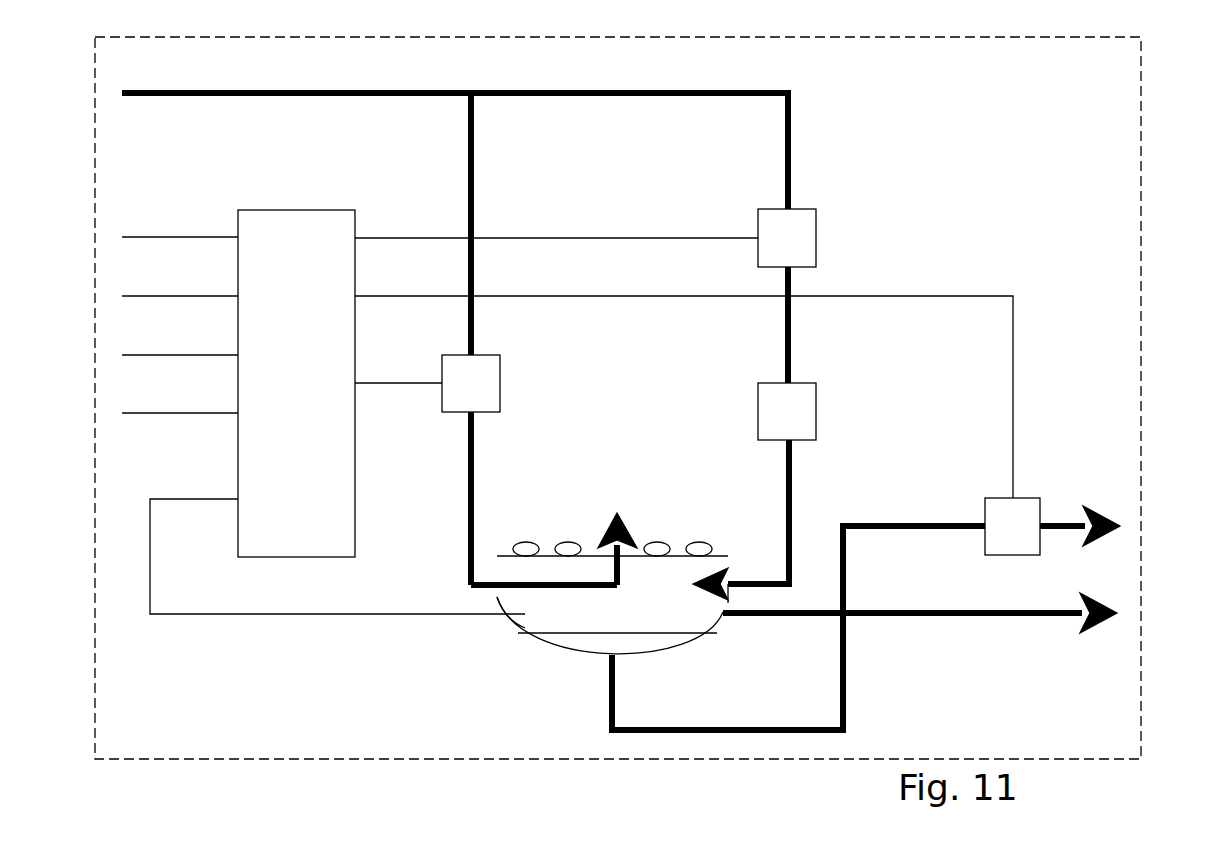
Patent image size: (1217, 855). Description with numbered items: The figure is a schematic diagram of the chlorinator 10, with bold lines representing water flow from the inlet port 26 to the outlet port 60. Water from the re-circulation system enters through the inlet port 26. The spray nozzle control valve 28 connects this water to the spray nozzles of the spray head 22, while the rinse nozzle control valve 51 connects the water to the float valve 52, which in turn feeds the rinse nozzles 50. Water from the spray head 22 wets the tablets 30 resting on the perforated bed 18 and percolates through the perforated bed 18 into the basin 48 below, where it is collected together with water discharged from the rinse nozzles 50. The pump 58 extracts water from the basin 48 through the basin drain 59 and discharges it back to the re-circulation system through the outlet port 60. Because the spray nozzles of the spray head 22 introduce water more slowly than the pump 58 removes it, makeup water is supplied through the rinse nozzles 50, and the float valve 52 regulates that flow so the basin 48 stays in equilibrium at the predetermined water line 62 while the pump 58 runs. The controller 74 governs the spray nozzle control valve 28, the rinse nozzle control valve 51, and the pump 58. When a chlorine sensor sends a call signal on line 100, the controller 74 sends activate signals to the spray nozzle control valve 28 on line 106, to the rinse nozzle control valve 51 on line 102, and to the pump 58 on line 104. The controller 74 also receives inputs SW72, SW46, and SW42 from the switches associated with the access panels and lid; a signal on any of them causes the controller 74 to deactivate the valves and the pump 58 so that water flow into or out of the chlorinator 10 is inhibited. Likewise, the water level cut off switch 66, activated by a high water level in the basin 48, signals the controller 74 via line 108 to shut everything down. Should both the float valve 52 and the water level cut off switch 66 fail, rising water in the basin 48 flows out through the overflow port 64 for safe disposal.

The chlorinator 10 is at (1141, 323).
The inlet port 26 is at (182, 93).
The controller 74 is at (355, 470).
The line 100 is at (222, 236).
The switch input SW72 is at (228, 294).
The switch input SW46 is at (228, 353).
The switch input SW42 is at (228, 411).
The line 108 is at (222, 497).
The line 102 is at (368, 236).
The line 104 is at (368, 294).
The line 106 is at (368, 382).
The spray nozzle control valve 28 is at (500, 364).
The rinse nozzle control valve 51 is at (816, 236).
The float valve 52 is at (816, 410).
The perforated bed 18 is at (497, 553).
The tablets 30 is at (692, 542).
The spray head 22 is at (621, 523).
The rinse nozzles 50 is at (707, 585).
The basin 48 is at (693, 638).
The water line 62 is at (578, 632).
The water level cut off switch 66 is at (517, 627).
The basin drain 59 is at (617, 660).
The pump 58 is at (1010, 556).
The outlet port 60 is at (1056, 524).
The overflow port 64 is at (1045, 608).